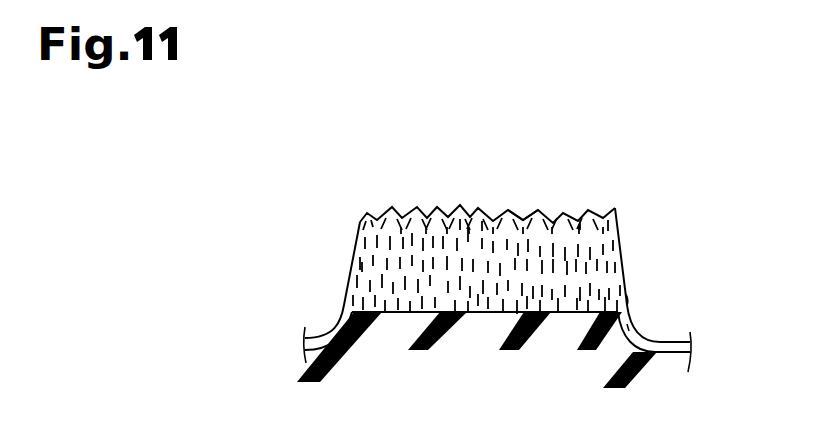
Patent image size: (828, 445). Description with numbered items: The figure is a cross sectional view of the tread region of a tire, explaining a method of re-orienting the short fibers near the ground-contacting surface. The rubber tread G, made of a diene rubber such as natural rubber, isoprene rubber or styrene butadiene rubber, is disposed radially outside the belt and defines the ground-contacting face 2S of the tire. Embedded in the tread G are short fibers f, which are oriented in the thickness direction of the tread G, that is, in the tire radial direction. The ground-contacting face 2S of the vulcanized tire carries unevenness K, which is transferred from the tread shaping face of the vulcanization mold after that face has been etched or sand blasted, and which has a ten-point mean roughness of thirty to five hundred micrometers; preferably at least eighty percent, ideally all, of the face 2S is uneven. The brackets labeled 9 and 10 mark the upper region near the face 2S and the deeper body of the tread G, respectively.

The ground-contacting face 2S is at (470, 206).
The unevenness K is at (524, 213).
The rubber tread G is at (616, 207).
The short fibers f is at (364, 222).
The tip region of pile layer 9 is at (620, 205).
The root region of pile layer 10 is at (629, 246).